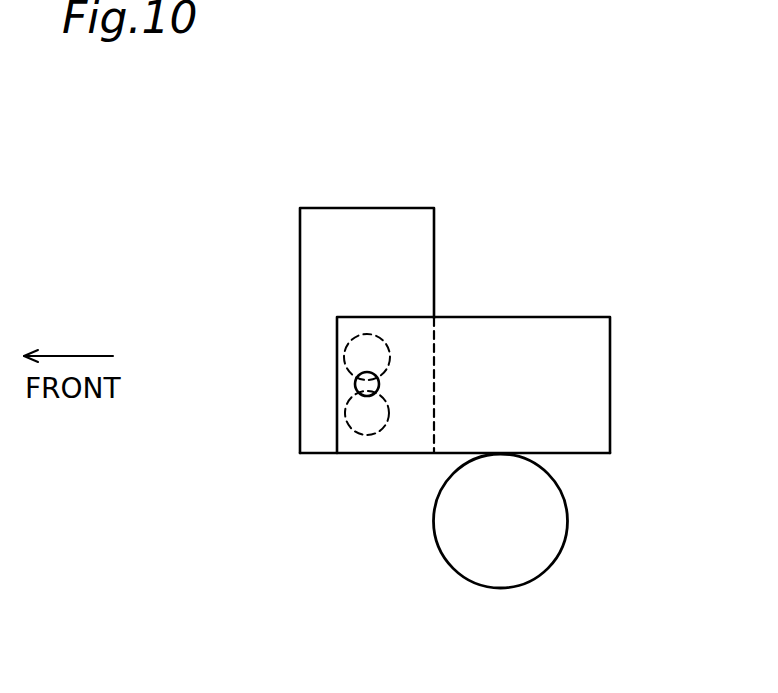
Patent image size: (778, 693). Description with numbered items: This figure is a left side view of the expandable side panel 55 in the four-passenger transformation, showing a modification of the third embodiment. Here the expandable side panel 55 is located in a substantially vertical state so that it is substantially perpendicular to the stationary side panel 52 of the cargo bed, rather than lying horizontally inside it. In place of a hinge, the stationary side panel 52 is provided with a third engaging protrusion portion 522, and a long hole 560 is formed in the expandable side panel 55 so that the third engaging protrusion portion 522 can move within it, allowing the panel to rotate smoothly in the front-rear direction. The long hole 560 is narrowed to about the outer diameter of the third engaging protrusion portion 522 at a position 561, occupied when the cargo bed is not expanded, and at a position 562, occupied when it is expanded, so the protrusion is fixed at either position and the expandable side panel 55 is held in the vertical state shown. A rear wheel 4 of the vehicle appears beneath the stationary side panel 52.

The expandable side panel 55 is at (365, 235).
The stationary side panel 52 is at (533, 348).
The long hole 560 is at (347, 344).
The position 561 is at (355, 385).
The position 562 is at (350, 425).
The third engaging protrusion portion 522 is at (367, 386).
The rear wheel 4 is at (528, 550).